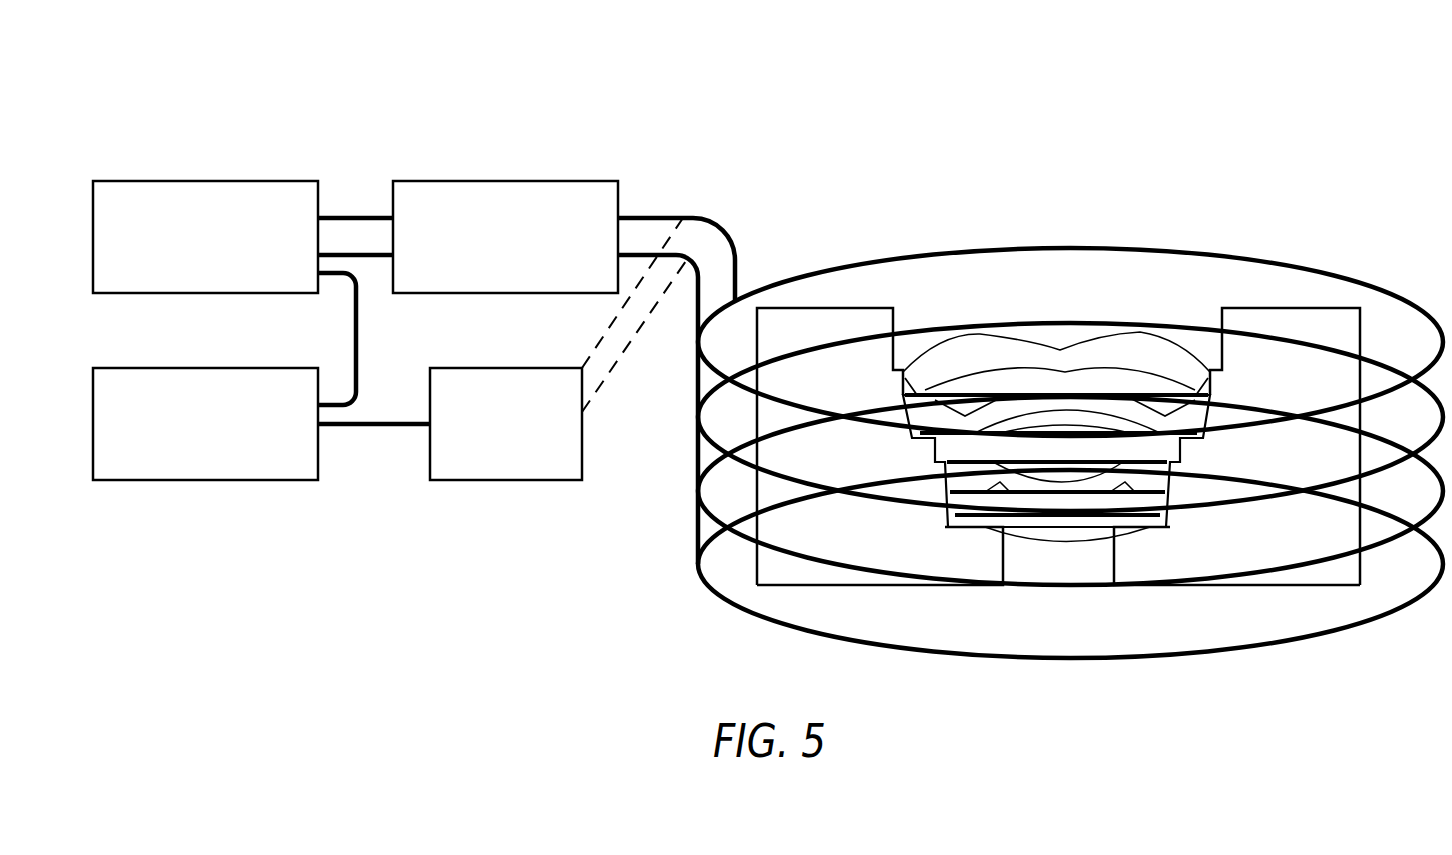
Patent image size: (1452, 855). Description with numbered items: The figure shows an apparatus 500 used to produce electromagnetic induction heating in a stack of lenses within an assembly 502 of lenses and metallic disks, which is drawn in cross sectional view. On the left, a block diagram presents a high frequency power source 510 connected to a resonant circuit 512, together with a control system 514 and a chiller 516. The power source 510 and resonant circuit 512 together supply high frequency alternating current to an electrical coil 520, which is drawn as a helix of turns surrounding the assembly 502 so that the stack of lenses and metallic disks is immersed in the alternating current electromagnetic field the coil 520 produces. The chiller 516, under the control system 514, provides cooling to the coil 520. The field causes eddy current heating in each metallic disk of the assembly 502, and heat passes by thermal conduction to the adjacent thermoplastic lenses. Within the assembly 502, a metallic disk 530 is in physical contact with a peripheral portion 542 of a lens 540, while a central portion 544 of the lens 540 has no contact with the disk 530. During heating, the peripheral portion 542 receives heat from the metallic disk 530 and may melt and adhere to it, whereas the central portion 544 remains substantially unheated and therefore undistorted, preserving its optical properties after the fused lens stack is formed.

The apparatus 500 is at (1219, 96).
The assembly 502 is at (1197, 588).
The high frequency power source 510 is at (224, 274).
The resonant circuit 512 is at (524, 274).
The control system 514 is at (224, 460).
The chiller 516 is at (525, 449).
The electrical coil 520 is at (1370, 285).
The metallic disk 530 is at (1213, 390).
The lens 540 is at (1060, 379).
The peripheral portion 542 is at (1205, 380).
The central portion 544 is at (1040, 358).